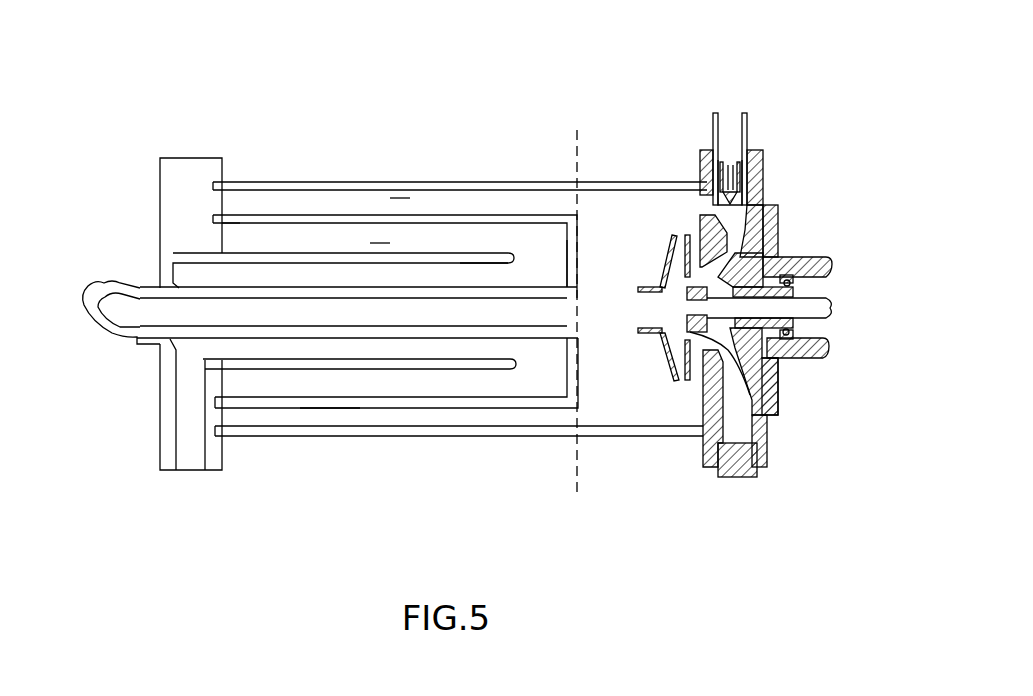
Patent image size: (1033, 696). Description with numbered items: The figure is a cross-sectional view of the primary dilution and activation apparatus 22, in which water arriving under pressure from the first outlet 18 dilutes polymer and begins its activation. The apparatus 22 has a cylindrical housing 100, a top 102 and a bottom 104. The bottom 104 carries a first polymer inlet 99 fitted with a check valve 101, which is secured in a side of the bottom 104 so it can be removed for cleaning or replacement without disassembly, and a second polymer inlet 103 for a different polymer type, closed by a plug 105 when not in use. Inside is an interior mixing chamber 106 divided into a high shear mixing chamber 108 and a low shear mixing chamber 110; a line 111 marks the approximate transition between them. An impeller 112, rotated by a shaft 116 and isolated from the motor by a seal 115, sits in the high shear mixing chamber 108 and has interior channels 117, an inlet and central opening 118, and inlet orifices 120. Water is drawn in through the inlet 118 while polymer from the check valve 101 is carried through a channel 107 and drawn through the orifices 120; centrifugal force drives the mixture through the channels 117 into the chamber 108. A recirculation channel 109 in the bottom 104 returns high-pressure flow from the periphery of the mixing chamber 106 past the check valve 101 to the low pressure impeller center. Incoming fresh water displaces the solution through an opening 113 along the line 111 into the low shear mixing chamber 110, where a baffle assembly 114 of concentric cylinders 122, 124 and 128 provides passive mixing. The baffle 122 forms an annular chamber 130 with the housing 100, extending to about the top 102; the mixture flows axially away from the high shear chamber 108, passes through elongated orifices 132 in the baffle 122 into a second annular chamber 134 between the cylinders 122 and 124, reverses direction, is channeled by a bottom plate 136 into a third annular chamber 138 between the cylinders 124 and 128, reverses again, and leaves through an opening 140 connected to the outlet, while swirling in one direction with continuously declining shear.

The first outlet 18 is at (103, 292).
The primary dilution and activation apparatus 22 is at (446, 452).
The first polymer inlet 99 is at (733, 220).
The cylindrical housing 100 is at (335, 437).
The check valve 101 is at (737, 177).
The top 102 is at (212, 450).
The second polymer inlet 103 is at (737, 425).
The bottom 104 is at (708, 467).
The plug 105 is at (742, 477).
The interior mixing chamber 106 is at (609, 400).
The channel 107 is at (770, 245).
The high shear mixing chamber 108 is at (613, 205).
The recirculation channel 109 is at (698, 207).
The low shear mixing chamber 110 is at (435, 180).
The line 111 is at (577, 480).
The impeller 112 is at (680, 280).
The opening 113 is at (573, 207).
The baffle assembly 114 is at (342, 210).
The seal 115 is at (800, 296).
The shaft 116 is at (820, 312).
The interior channels 117 is at (683, 375).
The inlet and central opening 118 is at (642, 307).
The inlet orifices 120 is at (670, 277).
The baffle cylinder 122 is at (268, 218).
The cylinder 124 is at (304, 258).
The cylinder 128 is at (250, 287).
The annular chamber 130 is at (400, 197).
The elongated orifices 132 is at (210, 237).
The second annular chamber 134 is at (378, 242).
The bottom plate 136 is at (563, 250).
The third annular chamber 138 is at (473, 270).
The opening 140 is at (190, 450).